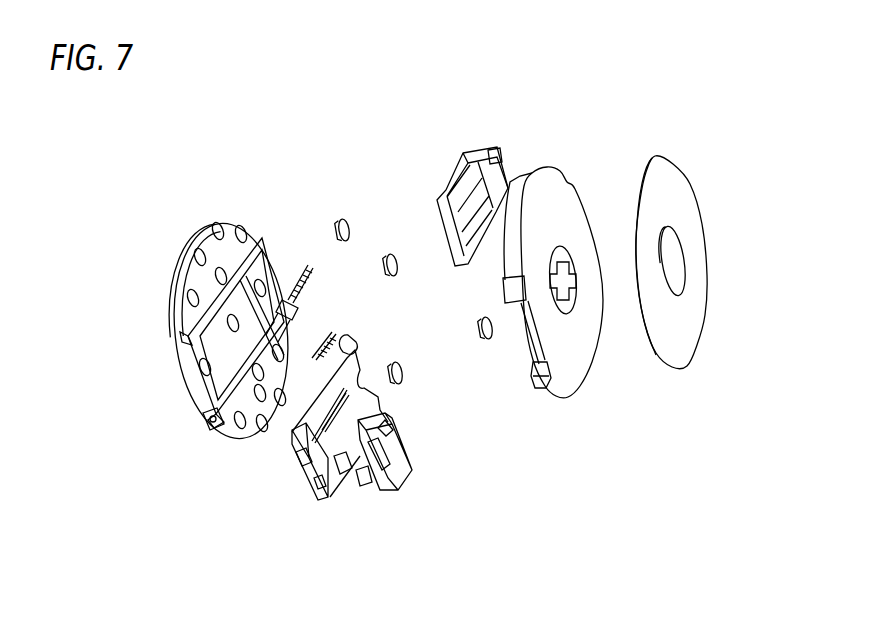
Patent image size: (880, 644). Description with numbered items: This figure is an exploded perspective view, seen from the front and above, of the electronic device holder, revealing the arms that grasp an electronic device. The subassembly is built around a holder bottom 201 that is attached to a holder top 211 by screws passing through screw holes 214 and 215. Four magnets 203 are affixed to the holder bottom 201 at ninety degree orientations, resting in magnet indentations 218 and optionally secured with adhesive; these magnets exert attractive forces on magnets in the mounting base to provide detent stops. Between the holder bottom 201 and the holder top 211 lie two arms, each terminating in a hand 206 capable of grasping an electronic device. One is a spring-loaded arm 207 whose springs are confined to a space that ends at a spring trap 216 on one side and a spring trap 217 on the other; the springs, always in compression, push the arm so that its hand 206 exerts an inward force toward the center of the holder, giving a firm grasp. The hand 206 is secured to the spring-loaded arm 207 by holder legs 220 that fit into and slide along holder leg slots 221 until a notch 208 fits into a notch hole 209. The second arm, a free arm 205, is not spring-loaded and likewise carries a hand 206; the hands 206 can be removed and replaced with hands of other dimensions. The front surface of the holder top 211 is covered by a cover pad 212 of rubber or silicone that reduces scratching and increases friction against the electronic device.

The holder bottom 201 is at (178, 287).
The magnets 203 is at (340, 217).
The free arm 205 is at (470, 157).
The hands 206 is at (492, 148).
The spring-loaded arm 207 is at (307, 502).
The notch 208 is at (313, 470).
The notch hole 209 is at (412, 477).
The holder top 211 is at (520, 182).
The cover pad 212 is at (642, 196).
The screw hole 214 is at (207, 420).
The screw hole 215 is at (533, 372).
The spring trap 216 is at (358, 348).
The spring trap 217 is at (215, 228).
The magnet indentations 218 is at (266, 258).
The holder legs 220 is at (362, 482).
The holder leg slots 221 is at (340, 470).